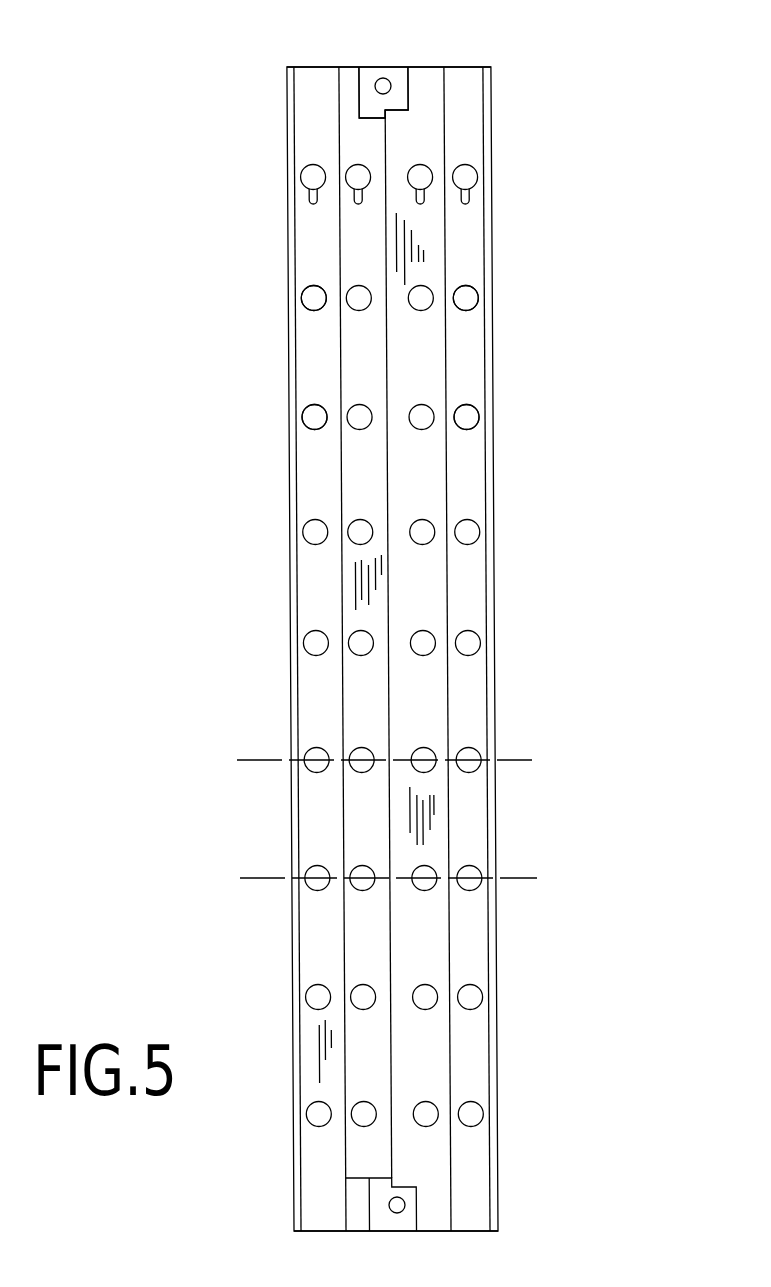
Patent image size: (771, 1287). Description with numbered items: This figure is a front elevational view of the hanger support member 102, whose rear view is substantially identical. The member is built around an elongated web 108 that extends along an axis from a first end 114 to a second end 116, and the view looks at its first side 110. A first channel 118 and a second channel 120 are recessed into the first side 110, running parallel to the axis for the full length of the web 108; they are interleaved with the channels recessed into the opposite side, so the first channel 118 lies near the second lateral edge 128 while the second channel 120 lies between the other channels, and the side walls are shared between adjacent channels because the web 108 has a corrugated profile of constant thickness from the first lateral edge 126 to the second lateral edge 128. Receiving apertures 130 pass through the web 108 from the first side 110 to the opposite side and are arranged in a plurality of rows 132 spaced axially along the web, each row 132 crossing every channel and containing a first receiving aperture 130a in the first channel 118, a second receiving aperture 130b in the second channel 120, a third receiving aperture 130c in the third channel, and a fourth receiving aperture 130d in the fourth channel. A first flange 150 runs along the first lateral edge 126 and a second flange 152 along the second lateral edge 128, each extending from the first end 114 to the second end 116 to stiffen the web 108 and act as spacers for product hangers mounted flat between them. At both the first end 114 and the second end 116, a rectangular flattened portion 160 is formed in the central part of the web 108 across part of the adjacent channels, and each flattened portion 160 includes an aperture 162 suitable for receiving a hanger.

The hanger support member 102 is at (496, 131).
The web 108 is at (348, 67).
The first side 110 is at (407, 150).
The first end 114 is at (470, 65).
The second end 116 is at (468, 1230).
The first channel 118 is at (467, 218).
The second channel 120 is at (358, 227).
The first lateral edge 126 is at (308, 358).
The second lateral edge 128 is at (482, 352).
The receiving apertures 130 is at (307, 752).
The first receiving aperture 130a is at (470, 888).
The second receiving aperture 130b is at (352, 891).
The third receiving aperture 130c is at (309, 886).
The fourth receiving aperture 130d is at (425, 890).
The rows 132 is at (512, 760).
The first flange 150 is at (287, 249).
The second flange 152 is at (493, 260).
The flattened portion 160 is at (398, 67).
The aperture 162 is at (380, 79).